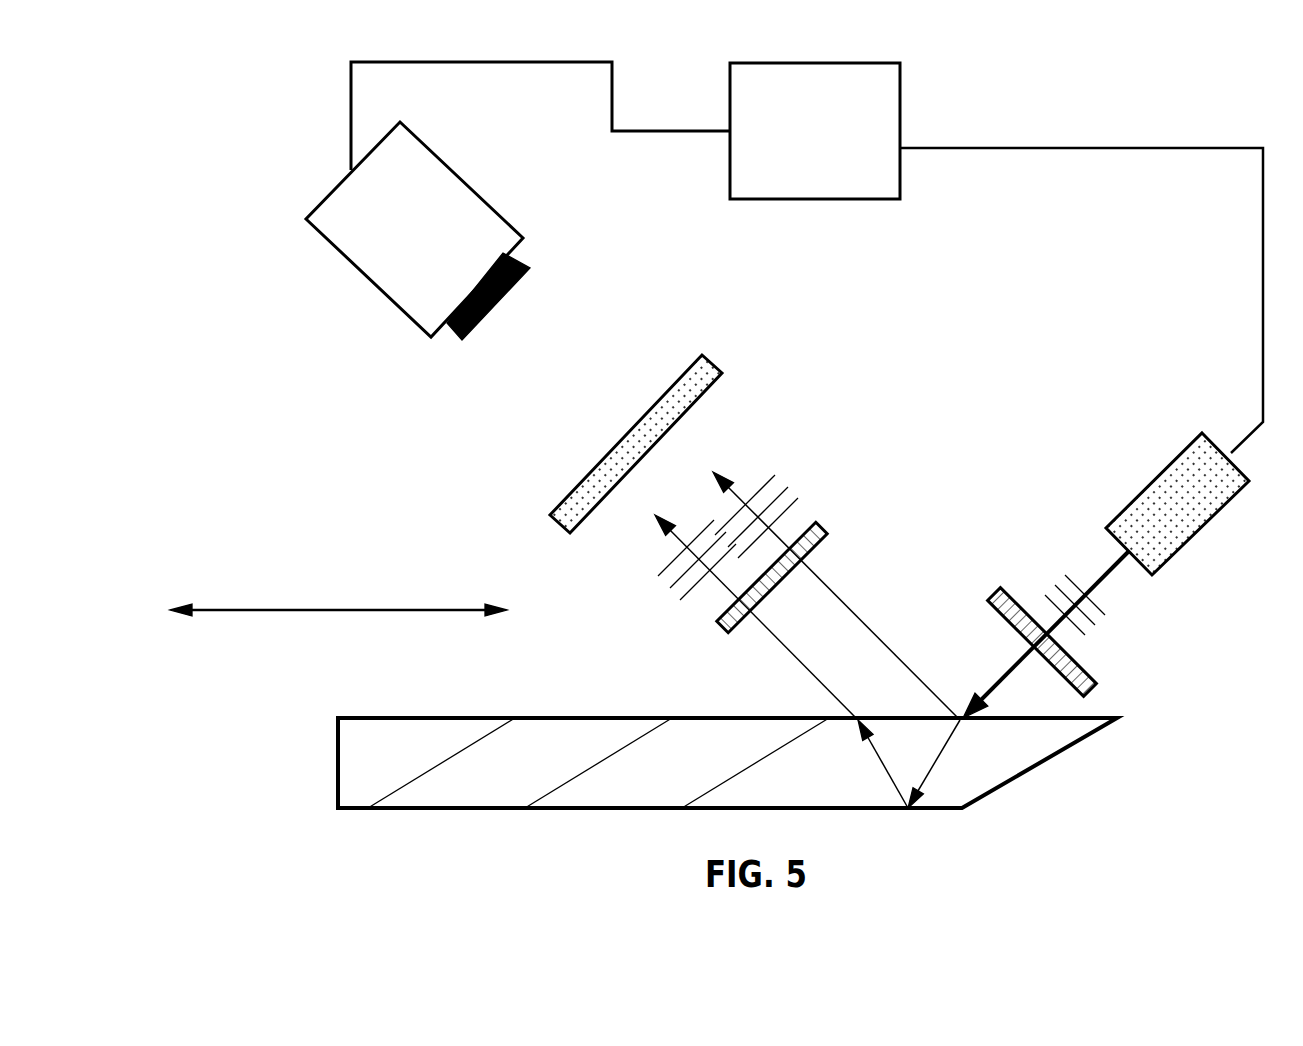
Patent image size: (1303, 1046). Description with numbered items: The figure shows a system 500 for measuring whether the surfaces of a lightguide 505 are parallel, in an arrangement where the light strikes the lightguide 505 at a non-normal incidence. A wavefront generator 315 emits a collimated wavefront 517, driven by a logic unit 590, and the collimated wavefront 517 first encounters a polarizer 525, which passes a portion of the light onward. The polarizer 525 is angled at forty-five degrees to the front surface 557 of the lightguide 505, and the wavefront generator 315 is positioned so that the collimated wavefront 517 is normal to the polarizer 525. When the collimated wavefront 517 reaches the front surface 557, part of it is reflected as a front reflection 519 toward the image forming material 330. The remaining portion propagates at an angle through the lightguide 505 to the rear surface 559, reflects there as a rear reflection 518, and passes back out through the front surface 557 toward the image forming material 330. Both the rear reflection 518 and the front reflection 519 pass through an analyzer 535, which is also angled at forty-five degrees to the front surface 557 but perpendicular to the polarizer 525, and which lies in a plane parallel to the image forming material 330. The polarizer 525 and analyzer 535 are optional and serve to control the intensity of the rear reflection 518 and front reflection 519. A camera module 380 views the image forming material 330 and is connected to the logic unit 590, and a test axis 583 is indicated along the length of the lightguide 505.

The system 500 is at (1294, 71).
The camera module 380 is at (436, 271).
The logic unit 590 is at (796, 157).
The image forming material 330 is at (721, 358).
The analyzer 535 is at (822, 527).
The wavefront generator 315 is at (1163, 470).
The polarizer 525 is at (997, 590).
The collimated wavefront 517 is at (1101, 619).
The front reflection 519 is at (825, 573).
The rear reflection 518 is at (832, 695).
The test axis 583 is at (338, 596).
The front surface 557 is at (532, 717).
The rear surface 559 is at (833, 812).
The lightguide 505 is at (779, 764).